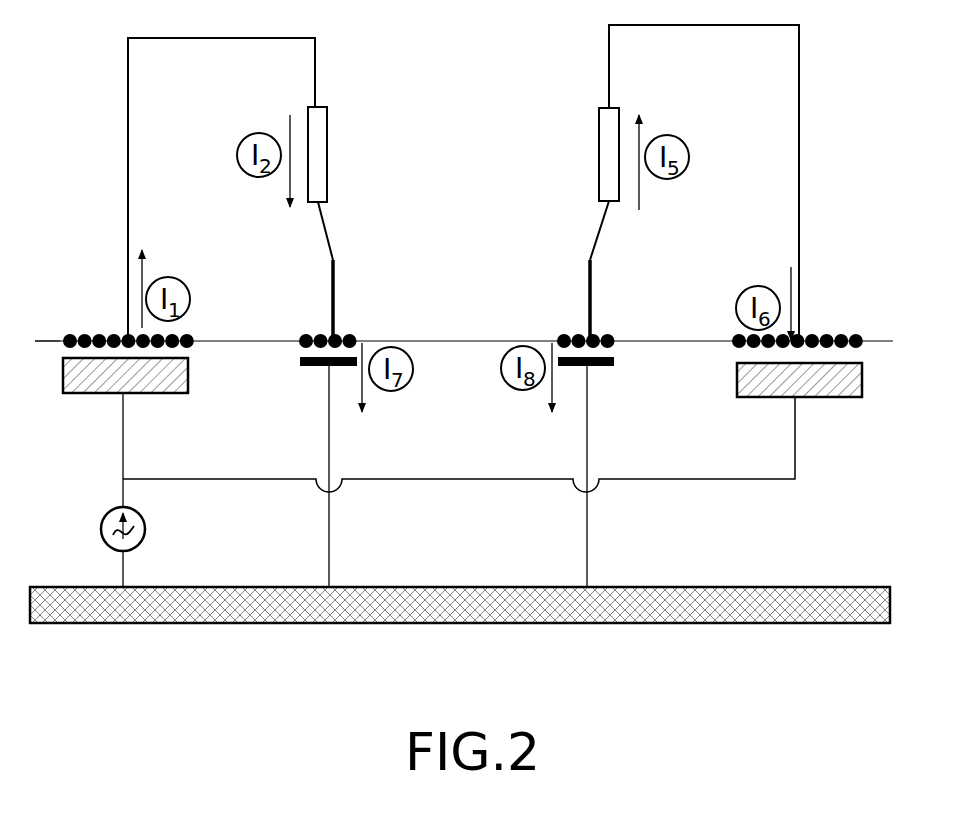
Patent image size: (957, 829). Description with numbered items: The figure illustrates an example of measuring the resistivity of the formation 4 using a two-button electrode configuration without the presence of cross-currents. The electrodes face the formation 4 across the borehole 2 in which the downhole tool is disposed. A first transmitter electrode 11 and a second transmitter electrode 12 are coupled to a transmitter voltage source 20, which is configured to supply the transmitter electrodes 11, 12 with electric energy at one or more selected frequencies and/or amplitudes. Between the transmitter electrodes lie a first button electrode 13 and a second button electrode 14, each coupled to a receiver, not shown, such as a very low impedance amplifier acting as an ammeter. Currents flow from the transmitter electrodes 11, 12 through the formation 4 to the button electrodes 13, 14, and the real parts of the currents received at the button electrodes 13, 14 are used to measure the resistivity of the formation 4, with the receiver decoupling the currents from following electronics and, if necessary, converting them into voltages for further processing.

The borehole 2 is at (880, 342).
The earth formation 4 is at (59, 284).
The first transmitter electrode 11 is at (70, 394).
The second transmitter electrode 12 is at (845, 398).
The first button electrode 13 is at (312, 367).
The second button electrode 14 is at (605, 367).
The transmitter voltage source 20 is at (100, 528).